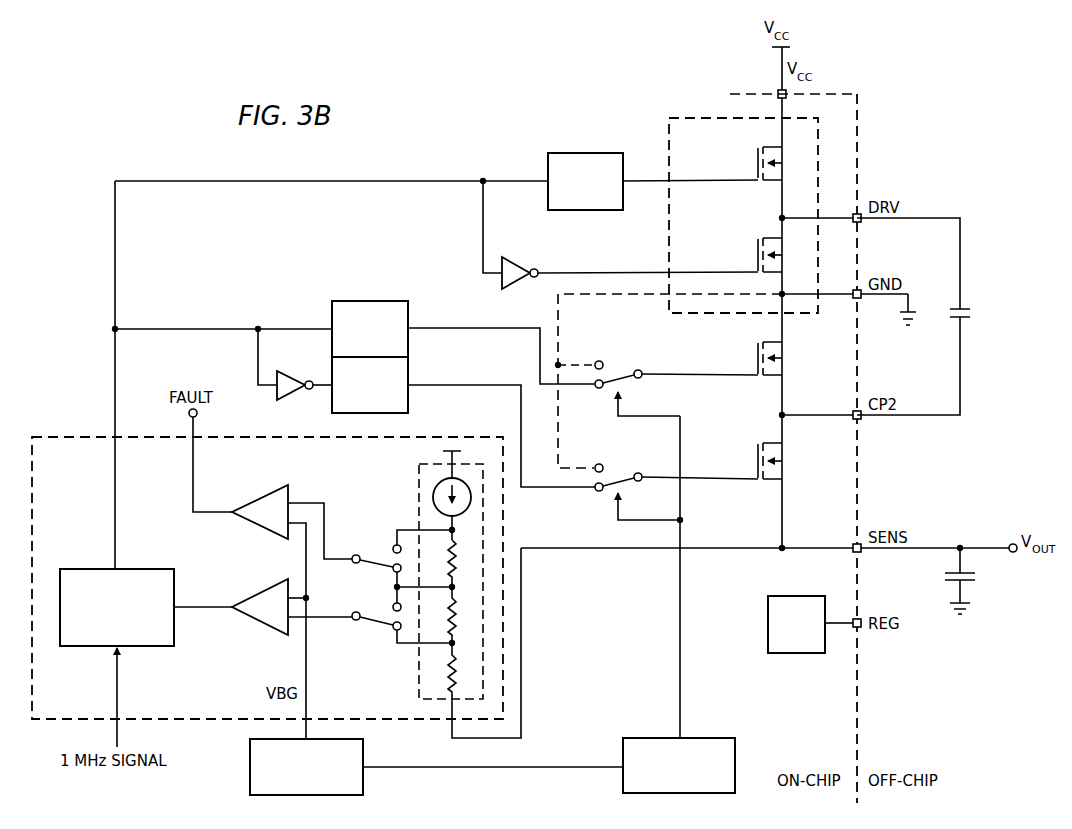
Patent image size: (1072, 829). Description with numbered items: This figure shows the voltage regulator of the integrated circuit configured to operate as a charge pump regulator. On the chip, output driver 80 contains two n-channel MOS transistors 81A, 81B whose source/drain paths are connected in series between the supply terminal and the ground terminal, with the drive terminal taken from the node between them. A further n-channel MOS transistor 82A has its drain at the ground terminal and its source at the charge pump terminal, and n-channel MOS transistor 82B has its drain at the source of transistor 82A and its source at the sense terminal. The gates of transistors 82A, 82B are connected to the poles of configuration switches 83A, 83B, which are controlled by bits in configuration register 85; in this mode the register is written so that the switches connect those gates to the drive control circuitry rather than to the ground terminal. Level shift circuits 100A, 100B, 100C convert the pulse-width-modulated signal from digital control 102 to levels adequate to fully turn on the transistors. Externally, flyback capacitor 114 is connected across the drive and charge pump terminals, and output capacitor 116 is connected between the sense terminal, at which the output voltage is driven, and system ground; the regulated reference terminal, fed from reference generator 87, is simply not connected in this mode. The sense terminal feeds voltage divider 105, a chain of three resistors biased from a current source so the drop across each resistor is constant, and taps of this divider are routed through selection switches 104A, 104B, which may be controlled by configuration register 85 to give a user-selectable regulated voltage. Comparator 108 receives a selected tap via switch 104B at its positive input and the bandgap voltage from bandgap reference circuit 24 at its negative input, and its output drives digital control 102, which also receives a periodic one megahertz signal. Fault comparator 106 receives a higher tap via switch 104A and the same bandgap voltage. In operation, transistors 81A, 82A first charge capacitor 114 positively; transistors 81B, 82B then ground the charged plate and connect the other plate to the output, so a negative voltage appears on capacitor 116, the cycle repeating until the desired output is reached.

The output driver 80 is at (707, 116).
The n-channel MOS transistor 81A is at (757, 152).
The n-channel MOS transistor 81B is at (757, 243).
The n-channel MOS transistor 82A is at (757, 346).
The n-channel MOS transistor 82B is at (757, 447).
The configuration switch 83A is at (627, 380).
The configuration switch 83B is at (627, 480).
The configuration register 85 is at (708, 738).
The reference generator 87 is at (795, 653).
The level shift circuit 100A is at (583, 153).
The level shift circuit 100B is at (368, 301).
The level shift circuit 100C is at (409, 376).
The digital control 102 is at (82, 569).
The selection switch 104A is at (378, 554).
The selection switch 104B is at (378, 635).
The voltage divider 105 is at (416, 682).
The fault comparator 106 is at (261, 538).
The comparator 108 is at (261, 633).
The bandgap reference circuit 24 is at (250, 775).
The flyback capacitor 114 is at (975, 314).
The output capacitor 116 is at (978, 577).